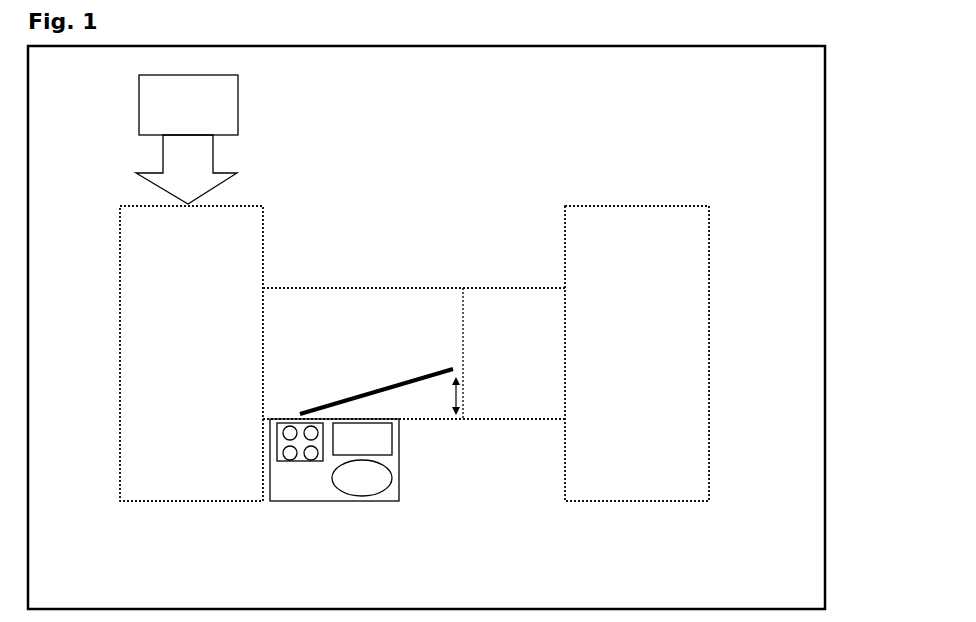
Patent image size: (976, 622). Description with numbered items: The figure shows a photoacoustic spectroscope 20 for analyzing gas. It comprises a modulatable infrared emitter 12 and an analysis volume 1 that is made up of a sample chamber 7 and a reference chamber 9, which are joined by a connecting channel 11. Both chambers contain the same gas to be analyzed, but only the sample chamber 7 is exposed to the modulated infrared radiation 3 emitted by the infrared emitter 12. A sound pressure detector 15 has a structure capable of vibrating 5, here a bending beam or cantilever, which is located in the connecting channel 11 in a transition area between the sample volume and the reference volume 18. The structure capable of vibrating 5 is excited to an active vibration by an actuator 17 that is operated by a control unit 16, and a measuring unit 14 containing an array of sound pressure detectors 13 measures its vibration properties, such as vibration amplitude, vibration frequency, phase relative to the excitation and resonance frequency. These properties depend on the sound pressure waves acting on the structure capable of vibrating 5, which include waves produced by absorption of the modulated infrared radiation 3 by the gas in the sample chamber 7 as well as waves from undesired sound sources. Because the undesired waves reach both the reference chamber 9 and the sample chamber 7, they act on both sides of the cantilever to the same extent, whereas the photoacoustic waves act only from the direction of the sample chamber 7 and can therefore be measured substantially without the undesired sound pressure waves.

The analysis volume 1 is at (724, 186).
The modulated infrared radiation 3 is at (213, 148).
The structure capable of vibrating 5 is at (398, 380).
The sample chamber 7 is at (265, 247).
The reference chamber 9 is at (709, 310).
The connecting channel 11 is at (400, 285).
The modulatable infrared emitter 12 is at (238, 103).
The array of sound pressure detectors 13 is at (285, 458).
The measuring unit 14 is at (303, 457).
The sound pressure detector 15 is at (400, 507).
The control unit 16 is at (393, 477).
The actuator 17 is at (400, 440).
The transition area between the sample volume and the reference volume 18 is at (463, 358).
The photoacoustic spectroscope 20 is at (826, 166).